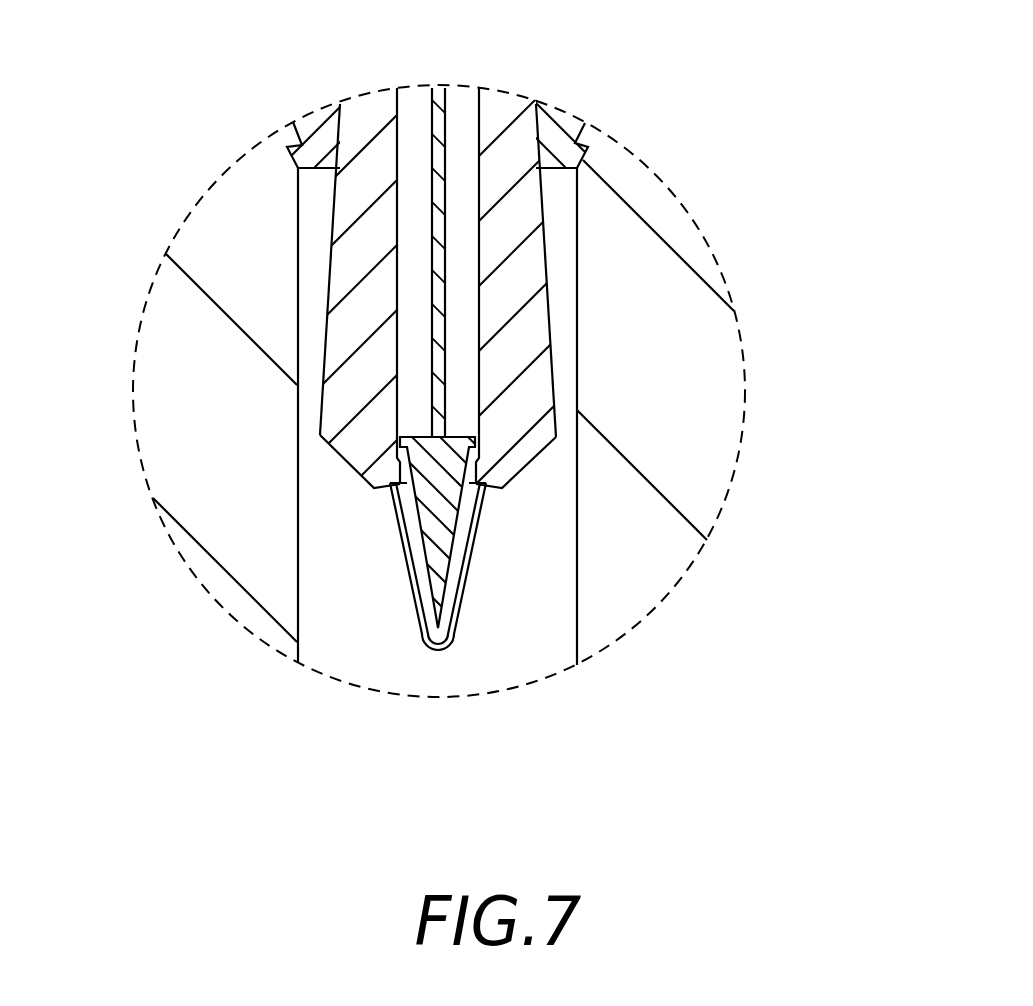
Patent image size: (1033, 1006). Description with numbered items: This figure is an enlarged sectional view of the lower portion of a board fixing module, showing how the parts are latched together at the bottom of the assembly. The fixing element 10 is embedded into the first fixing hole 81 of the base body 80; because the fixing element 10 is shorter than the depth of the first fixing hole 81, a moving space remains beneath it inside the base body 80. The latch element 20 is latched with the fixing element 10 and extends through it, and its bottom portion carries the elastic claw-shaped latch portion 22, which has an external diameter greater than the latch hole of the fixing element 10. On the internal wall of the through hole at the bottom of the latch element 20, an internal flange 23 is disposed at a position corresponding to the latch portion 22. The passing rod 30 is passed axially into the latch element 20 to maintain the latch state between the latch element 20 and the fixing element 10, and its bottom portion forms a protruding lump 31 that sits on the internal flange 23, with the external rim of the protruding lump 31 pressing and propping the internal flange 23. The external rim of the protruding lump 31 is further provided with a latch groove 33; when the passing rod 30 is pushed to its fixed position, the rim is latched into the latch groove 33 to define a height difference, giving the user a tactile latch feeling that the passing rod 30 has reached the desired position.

The fixing element 10 is at (557, 123).
The latch element 20 is at (320, 226).
The latch portion 22 is at (321, 423).
The internal flange 23 is at (476, 483).
The passing rod 30 is at (437, 110).
The protruding lump 31 is at (402, 492).
The latch groove 33 is at (473, 455).
The base body 80 is at (670, 233).
The first fixing hole 81 is at (573, 631).